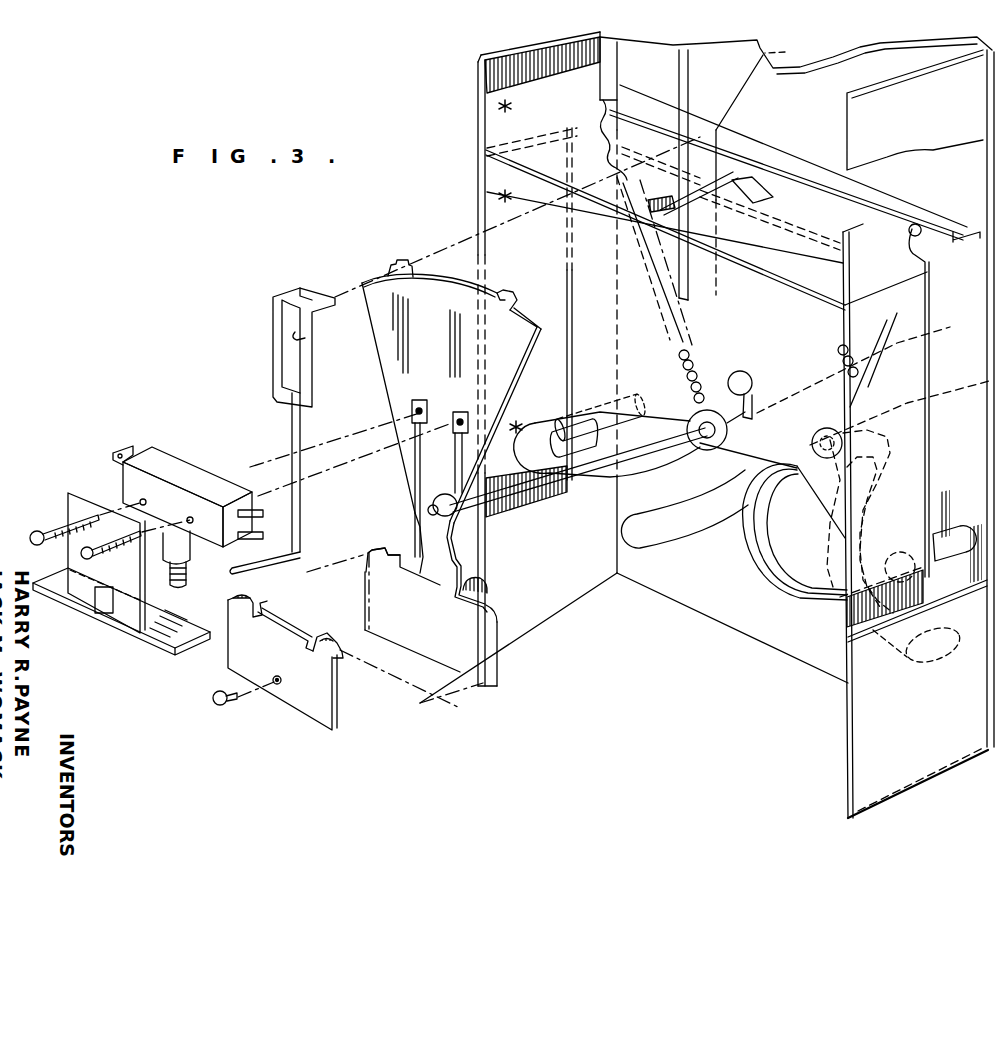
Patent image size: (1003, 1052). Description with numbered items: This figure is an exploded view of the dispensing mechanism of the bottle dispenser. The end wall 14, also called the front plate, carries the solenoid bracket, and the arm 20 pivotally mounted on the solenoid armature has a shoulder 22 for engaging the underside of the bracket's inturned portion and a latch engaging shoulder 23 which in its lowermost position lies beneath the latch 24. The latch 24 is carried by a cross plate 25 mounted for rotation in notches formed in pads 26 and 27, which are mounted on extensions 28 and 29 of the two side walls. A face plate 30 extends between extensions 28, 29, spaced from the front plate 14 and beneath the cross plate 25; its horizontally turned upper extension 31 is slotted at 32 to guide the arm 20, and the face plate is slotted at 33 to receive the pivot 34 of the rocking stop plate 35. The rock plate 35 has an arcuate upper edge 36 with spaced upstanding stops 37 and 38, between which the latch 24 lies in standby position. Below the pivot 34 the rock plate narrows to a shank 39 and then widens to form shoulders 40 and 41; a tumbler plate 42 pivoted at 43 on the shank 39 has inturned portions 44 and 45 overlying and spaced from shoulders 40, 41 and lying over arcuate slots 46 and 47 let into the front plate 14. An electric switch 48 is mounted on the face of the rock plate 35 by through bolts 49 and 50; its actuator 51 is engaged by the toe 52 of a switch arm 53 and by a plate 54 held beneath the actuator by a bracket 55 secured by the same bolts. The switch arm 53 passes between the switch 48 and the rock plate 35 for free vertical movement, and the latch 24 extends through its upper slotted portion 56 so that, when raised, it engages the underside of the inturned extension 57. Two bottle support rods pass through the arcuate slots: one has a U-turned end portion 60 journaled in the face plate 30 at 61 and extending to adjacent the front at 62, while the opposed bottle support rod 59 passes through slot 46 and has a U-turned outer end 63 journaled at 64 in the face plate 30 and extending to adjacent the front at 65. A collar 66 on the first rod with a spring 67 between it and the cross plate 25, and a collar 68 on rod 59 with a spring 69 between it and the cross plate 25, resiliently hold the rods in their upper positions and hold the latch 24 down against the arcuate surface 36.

The end wall 14 is at (797, 391).
The arm 20 is at (723, 83).
The shoulder 22 is at (789, 46).
The latch engaging shoulder 23 is at (738, 215).
The latch 24 is at (733, 177).
The cross plate 25 is at (890, 197).
The pad 26 is at (600, 77).
The pad 27 is at (957, 230).
The extension 28 is at (478, 79).
The extension 29 is at (843, 326).
The face plate 30 is at (741, 470).
The upper extension 31 is at (818, 266).
The slot 32 is at (676, 202).
The slot 33 is at (752, 378).
The pivot 34 is at (428, 509).
The rocking stop plate 35 is at (448, 338).
The arcuate upper edge 36 is at (533, 322).
The stop 37 is at (397, 262).
The stop 38 is at (511, 291).
The shank 39 is at (442, 544).
The shoulder 40 is at (366, 571).
The shoulder 41 is at (500, 620).
The tumbler plate 42 is at (317, 695).
The pivot 43 is at (243, 708).
The inturned portion 44 is at (262, 598).
The inturned portion 45 is at (488, 589).
The arcuate slot 46 is at (692, 510).
The arcuate slot 47 is at (947, 643).
The electric switch 48 is at (170, 458).
The through bolt 49 is at (35, 531).
The through bolt 50 is at (96, 559).
The actuator 51 is at (186, 559).
The toe 52 is at (240, 575).
The switch arm 53 is at (300, 427).
The plate 54 is at (182, 650).
The bracket 55 is at (128, 605).
The slotted portion 56 is at (306, 336).
The inturned extension 57 is at (300, 289).
The bottle support rod 59 is at (875, 379).
The U-turned end portion 60 is at (790, 573).
The journal 61 is at (900, 551).
The end location 62 is at (970, 527).
The U-turned outer end 63 is at (528, 438).
The journal 64 is at (582, 408).
The end location 65 is at (644, 396).
The collar 66 is at (815, 428).
The spring 67 is at (862, 384).
The collar 68 is at (707, 408).
The spring 69 is at (687, 322).